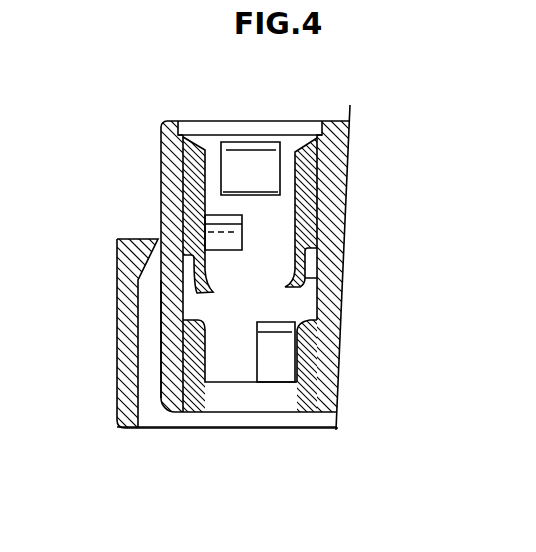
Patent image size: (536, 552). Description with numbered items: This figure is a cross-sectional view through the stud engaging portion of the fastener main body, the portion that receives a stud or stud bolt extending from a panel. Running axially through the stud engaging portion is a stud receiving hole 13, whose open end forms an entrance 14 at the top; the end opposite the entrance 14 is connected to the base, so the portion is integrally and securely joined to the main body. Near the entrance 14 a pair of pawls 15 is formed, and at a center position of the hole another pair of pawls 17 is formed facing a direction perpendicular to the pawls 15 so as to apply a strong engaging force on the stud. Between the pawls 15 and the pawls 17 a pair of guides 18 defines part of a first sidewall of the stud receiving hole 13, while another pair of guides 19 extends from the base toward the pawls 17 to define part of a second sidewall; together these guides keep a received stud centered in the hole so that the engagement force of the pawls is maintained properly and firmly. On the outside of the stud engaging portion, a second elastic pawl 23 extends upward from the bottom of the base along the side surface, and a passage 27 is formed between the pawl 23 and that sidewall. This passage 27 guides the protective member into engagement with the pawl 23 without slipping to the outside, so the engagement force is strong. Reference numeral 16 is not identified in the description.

The stud receiving hole 13 is at (212, 168).
The entrance 14 is at (188, 126).
The pawls 15 is at (250, 170).
The housing 16 is at (161, 413).
The pawls 17 is at (338, 277).
The guides 18 is at (230, 238).
The guides 19 is at (278, 355).
The second elastic pawl 23 is at (118, 307).
The passage 27 is at (149, 349).